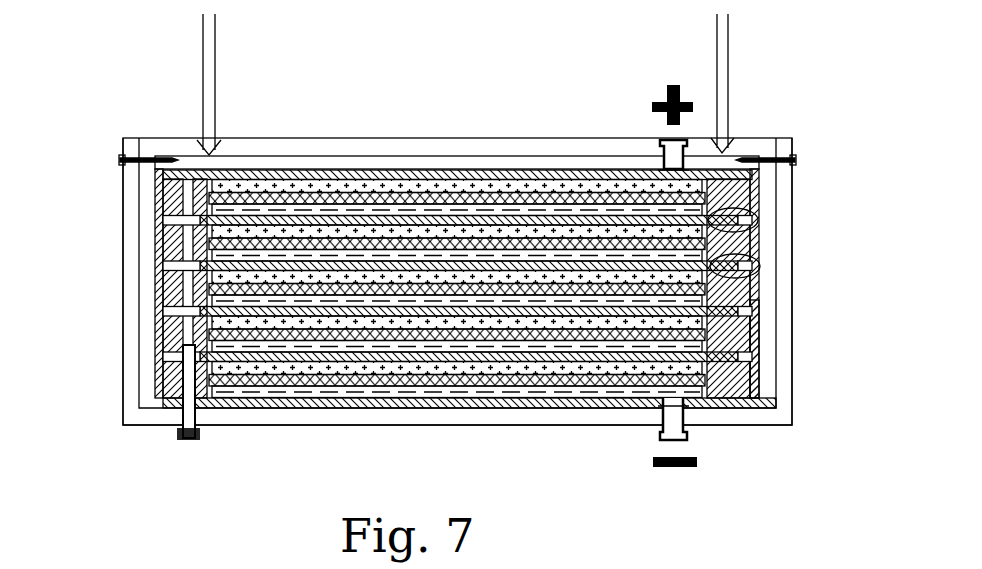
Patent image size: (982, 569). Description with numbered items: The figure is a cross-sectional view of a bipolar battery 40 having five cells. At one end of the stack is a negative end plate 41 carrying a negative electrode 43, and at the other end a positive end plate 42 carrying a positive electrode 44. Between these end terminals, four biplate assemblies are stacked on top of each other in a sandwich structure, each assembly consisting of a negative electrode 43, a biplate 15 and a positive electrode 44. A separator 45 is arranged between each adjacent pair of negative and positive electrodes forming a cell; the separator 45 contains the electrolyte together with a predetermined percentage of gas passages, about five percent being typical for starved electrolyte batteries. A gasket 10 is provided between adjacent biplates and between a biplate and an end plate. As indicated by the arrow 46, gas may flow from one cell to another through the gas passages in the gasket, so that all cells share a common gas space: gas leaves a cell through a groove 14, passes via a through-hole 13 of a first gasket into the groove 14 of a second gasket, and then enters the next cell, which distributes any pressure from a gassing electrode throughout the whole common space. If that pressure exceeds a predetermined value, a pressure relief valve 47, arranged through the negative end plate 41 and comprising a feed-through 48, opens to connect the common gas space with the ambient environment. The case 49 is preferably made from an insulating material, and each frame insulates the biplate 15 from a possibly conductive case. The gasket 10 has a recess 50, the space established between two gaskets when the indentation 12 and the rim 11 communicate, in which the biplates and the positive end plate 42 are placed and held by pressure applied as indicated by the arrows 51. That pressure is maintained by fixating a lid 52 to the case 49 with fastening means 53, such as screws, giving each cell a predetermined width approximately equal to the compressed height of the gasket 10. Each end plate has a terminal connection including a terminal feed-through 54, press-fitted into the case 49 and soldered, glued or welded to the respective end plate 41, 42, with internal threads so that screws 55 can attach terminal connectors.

The bipolar battery 40 is at (137, 76).
The negative end plate 41 is at (395, 406).
The positive end plate 42 is at (435, 176).
The negative electrode 43 is at (392, 182).
The positive electrode 44 is at (338, 196).
The separator 45 is at (507, 175).
The arrow 46 is at (187, 343).
The pressure relief valve 47 is at (185, 440).
The feed-through 48 is at (182, 416).
The case 49 is at (780, 418).
The recess 50 is at (752, 263).
The arrows 51 is at (466, 77).
The lid 52 is at (268, 164).
The fastening means 53 is at (120, 158).
The terminal feed-through 54 is at (663, 166).
The screws 55 is at (686, 142).
The gasket 10 is at (158, 285).
The rim 11 is at (752, 308).
The indentation 12 is at (758, 300).
The through-hole 13 is at (187, 248).
The groove 14 is at (197, 227).
The biplate 15 is at (745, 217).